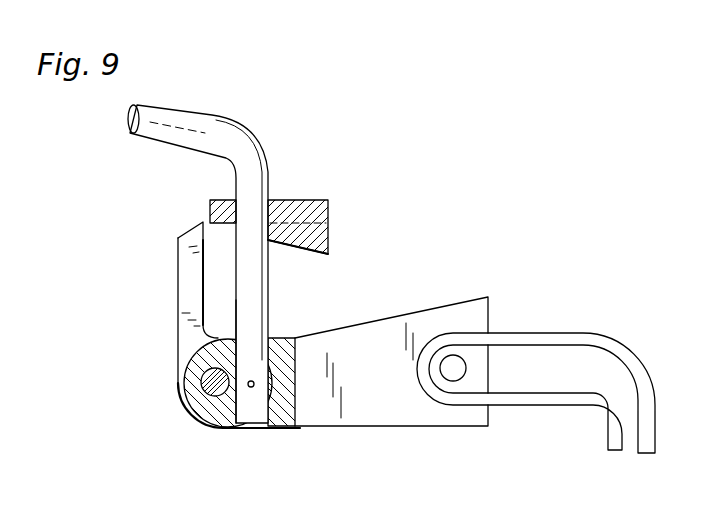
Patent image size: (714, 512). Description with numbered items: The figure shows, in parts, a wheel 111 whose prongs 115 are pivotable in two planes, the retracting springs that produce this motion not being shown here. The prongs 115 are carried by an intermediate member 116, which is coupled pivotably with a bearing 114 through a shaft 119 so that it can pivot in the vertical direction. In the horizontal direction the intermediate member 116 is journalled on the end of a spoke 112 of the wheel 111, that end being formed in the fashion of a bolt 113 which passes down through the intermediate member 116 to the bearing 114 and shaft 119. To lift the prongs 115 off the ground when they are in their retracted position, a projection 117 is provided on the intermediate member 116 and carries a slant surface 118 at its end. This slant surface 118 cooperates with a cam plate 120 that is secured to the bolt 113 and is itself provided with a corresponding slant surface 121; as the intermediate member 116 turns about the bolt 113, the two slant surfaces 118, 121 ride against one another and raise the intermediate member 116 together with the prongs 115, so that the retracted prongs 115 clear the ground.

The wheel 111 is at (140, 291).
The spoke 112 is at (217, 112).
The bolt 113 is at (250, 293).
The bearing 114 is at (193, 367).
The prong 115 is at (603, 435).
The intermediate member 116 is at (385, 405).
The projection 117 is at (187, 267).
The slant surface 118 is at (187, 232).
The shaft 119 is at (210, 390).
The cam plate 120 is at (327, 199).
The slant surface 121 is at (292, 247).